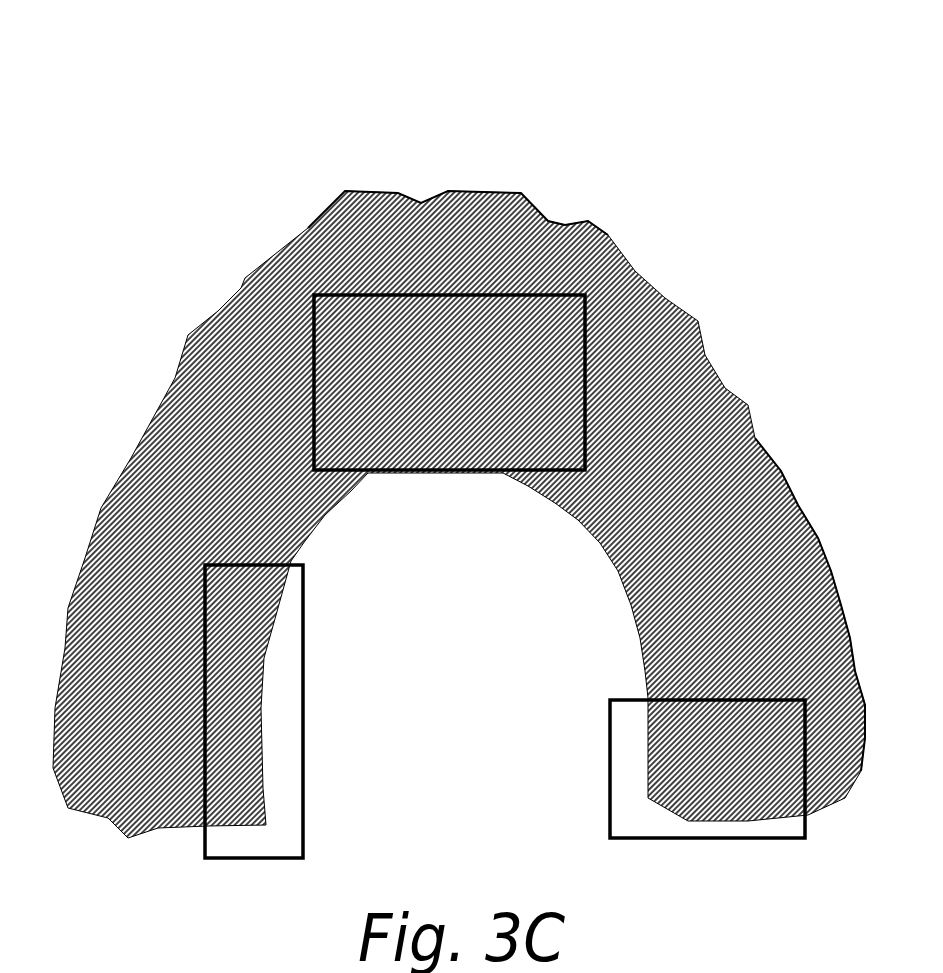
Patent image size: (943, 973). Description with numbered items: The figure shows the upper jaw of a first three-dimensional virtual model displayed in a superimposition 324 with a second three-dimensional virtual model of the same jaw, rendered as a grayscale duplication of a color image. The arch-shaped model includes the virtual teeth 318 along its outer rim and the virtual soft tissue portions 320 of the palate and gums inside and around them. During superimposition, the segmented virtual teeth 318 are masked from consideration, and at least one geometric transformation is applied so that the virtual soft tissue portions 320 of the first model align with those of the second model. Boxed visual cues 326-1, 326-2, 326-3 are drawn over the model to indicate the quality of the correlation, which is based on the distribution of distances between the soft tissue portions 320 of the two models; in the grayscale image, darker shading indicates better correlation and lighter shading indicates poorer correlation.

The superimposition 324 is at (88, 108).
The 3D virtual teeth 318 is at (472, 186).
The 3D virtual soft tissue portions 320 is at (627, 612).
The visual cue 326-1 is at (297, 703).
The visual cue 326-2 is at (602, 760).
The visual cue 326-3 is at (437, 463).